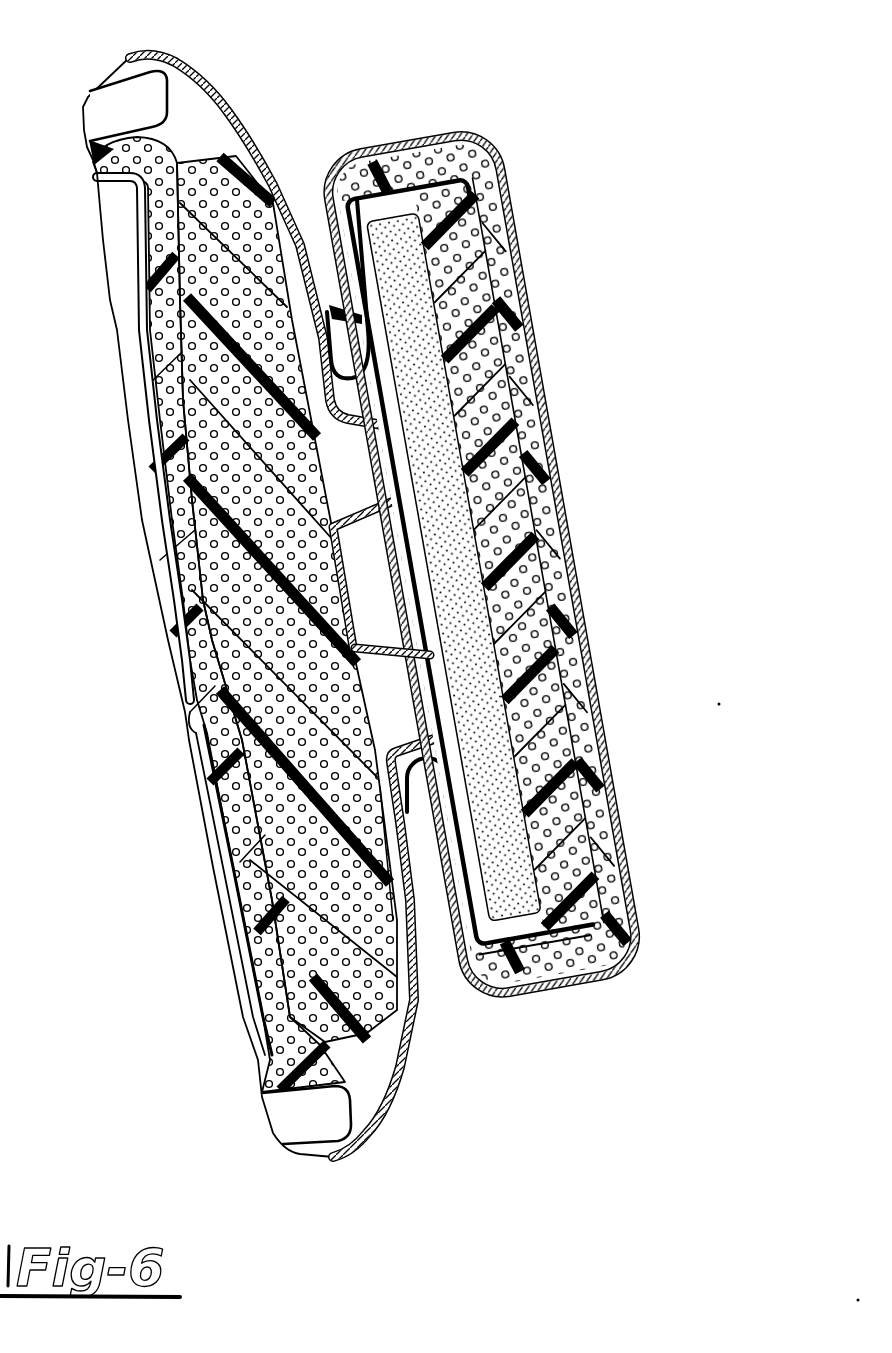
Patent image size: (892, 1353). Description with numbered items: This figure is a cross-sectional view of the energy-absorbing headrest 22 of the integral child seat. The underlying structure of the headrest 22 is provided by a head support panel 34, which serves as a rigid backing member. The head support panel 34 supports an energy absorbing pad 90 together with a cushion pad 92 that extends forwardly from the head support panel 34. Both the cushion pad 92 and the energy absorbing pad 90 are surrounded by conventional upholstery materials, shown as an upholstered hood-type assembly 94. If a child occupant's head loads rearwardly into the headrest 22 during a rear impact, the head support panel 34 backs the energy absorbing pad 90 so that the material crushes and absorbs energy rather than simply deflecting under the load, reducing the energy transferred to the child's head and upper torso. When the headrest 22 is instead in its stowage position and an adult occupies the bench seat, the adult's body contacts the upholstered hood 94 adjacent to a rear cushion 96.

The headrest 22 is at (498, 525).
The upholstered hood-type assembly 94 is at (512, 150).
The cushion pad 92 is at (550, 463).
The energy absorbing pad 90 is at (472, 611).
The head support panel 34 is at (433, 637).
The rear cushion 96 is at (267, 660).